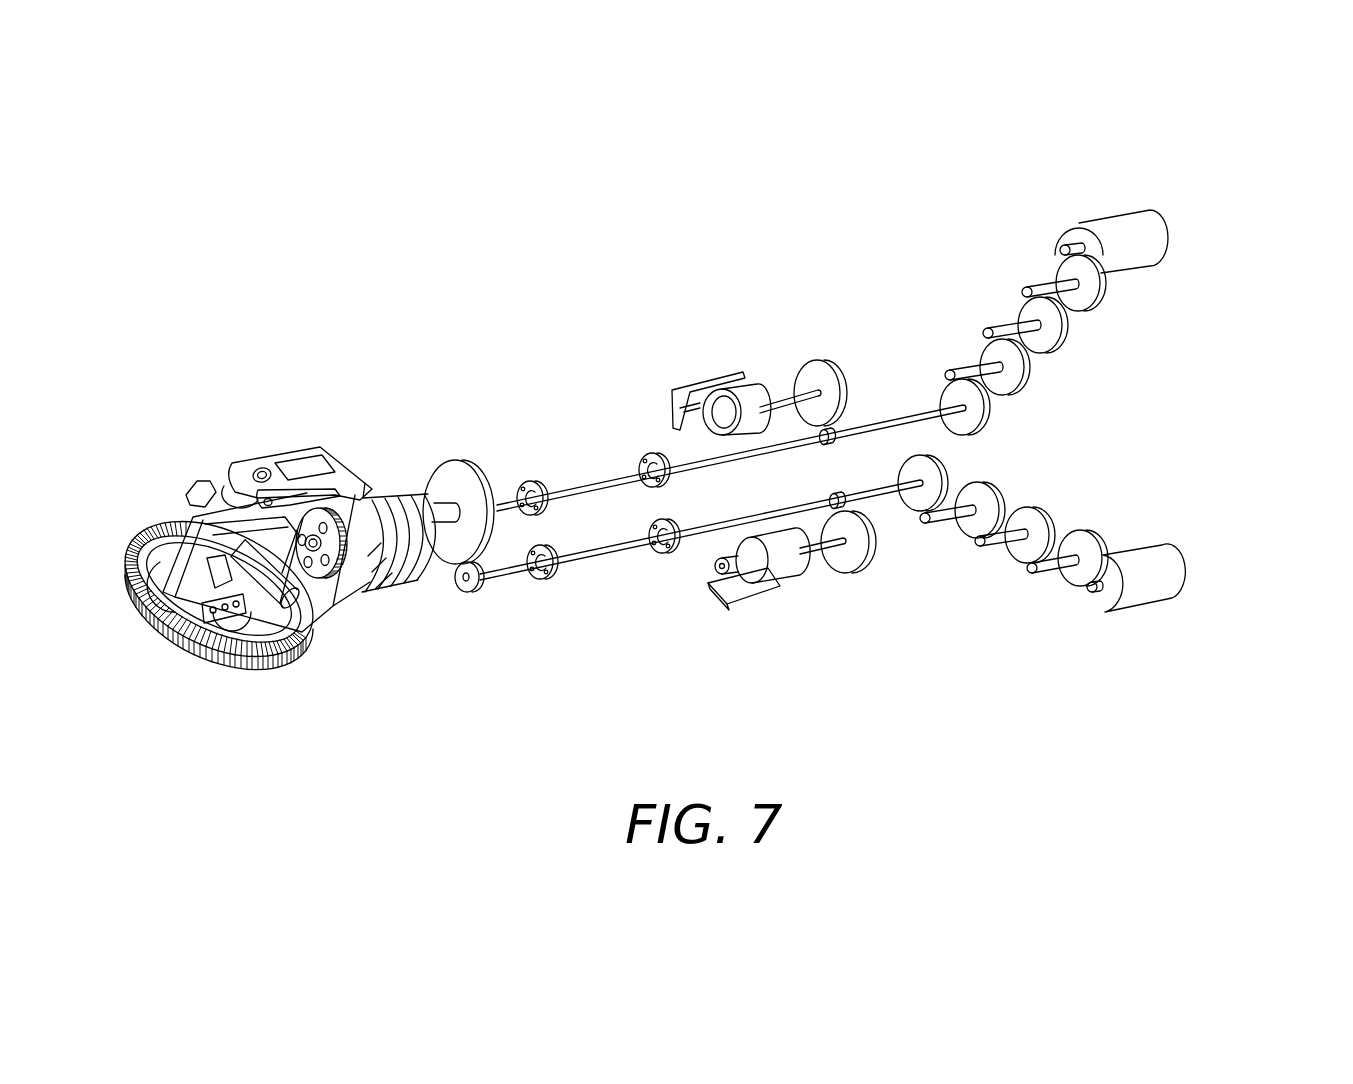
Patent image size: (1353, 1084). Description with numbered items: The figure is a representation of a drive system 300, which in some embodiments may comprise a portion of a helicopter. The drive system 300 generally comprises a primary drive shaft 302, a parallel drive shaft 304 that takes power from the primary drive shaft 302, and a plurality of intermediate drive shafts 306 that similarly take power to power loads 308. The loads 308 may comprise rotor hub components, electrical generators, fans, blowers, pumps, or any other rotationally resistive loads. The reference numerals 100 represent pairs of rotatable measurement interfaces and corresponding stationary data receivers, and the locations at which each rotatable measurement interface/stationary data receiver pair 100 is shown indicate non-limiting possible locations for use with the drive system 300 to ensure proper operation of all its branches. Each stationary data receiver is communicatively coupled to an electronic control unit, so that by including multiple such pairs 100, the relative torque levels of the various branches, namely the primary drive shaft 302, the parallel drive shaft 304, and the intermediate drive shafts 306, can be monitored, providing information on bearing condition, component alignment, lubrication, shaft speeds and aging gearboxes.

The drive system 300 is at (238, 200).
The primary drive shaft 302 is at (442, 508).
The parallel drive shaft 304 is at (499, 580).
The rotatable measurement interface/stationary data receiver pair 100 is at (453, 512).
The intermediate drive shaft 306 is at (781, 396).
The load 308 is at (738, 390).